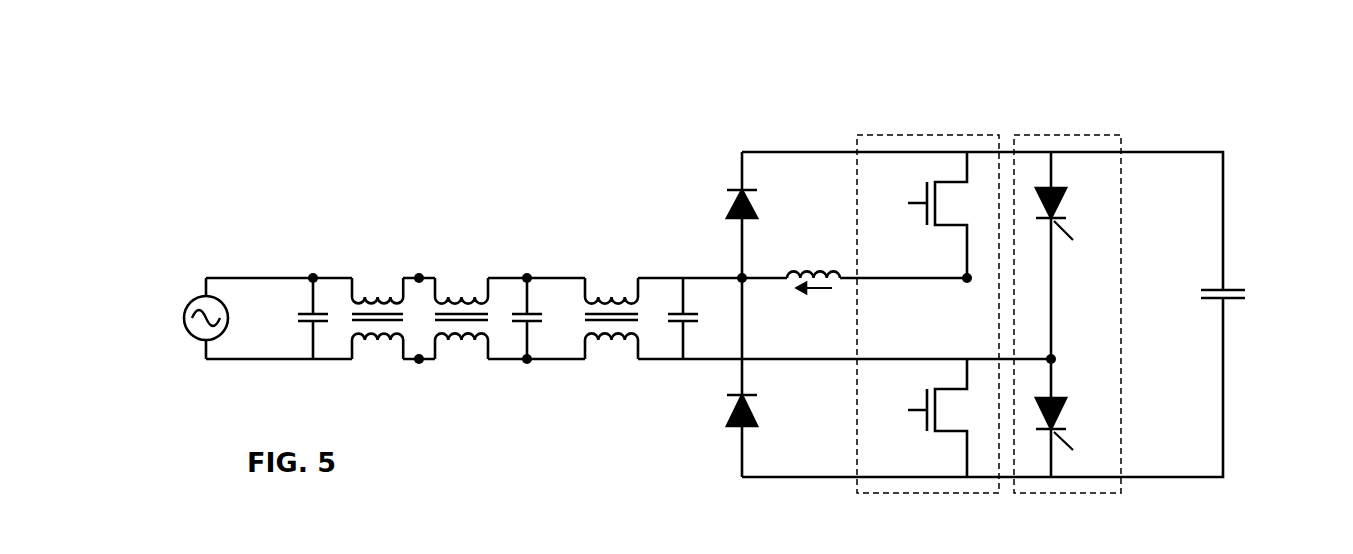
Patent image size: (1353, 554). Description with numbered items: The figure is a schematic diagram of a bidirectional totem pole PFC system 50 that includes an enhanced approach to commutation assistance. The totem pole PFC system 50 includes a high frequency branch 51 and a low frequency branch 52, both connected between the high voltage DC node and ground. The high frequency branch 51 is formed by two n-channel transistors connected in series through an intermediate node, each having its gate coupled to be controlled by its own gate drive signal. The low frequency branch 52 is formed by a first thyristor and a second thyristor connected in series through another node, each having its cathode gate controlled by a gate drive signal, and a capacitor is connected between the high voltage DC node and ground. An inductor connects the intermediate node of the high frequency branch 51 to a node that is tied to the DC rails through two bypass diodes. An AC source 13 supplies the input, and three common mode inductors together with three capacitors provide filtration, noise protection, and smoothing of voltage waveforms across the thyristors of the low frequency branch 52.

The AC source 13 is at (188, 334).
The bidirectional totem pole PFC system 50 is at (1290, 142).
The high frequency branch 51 is at (910, 135).
The low frequency branch 52 is at (1031, 135).